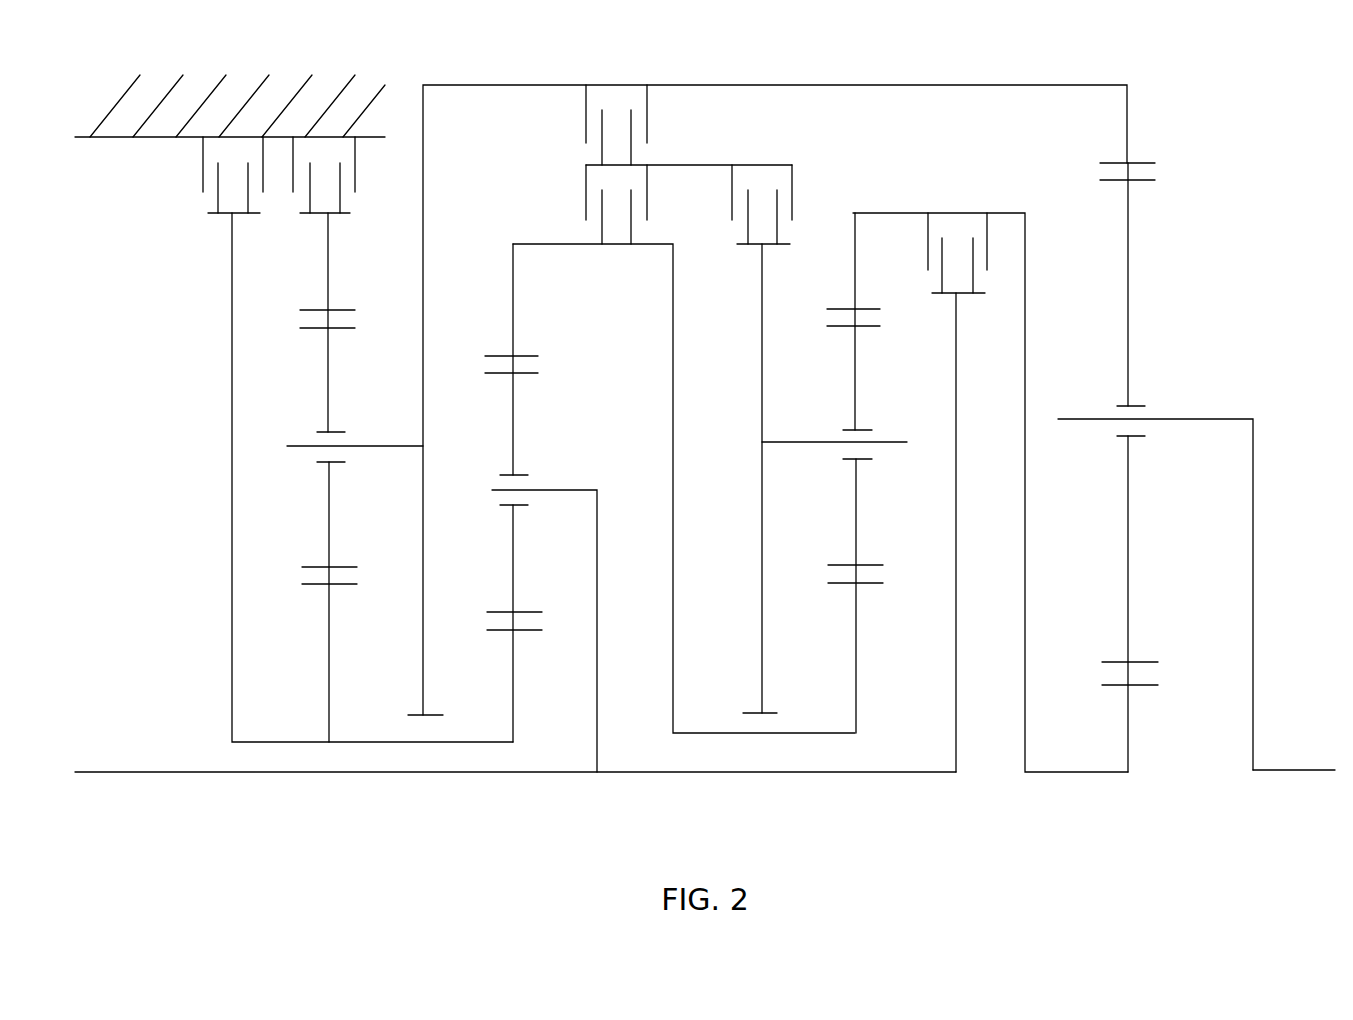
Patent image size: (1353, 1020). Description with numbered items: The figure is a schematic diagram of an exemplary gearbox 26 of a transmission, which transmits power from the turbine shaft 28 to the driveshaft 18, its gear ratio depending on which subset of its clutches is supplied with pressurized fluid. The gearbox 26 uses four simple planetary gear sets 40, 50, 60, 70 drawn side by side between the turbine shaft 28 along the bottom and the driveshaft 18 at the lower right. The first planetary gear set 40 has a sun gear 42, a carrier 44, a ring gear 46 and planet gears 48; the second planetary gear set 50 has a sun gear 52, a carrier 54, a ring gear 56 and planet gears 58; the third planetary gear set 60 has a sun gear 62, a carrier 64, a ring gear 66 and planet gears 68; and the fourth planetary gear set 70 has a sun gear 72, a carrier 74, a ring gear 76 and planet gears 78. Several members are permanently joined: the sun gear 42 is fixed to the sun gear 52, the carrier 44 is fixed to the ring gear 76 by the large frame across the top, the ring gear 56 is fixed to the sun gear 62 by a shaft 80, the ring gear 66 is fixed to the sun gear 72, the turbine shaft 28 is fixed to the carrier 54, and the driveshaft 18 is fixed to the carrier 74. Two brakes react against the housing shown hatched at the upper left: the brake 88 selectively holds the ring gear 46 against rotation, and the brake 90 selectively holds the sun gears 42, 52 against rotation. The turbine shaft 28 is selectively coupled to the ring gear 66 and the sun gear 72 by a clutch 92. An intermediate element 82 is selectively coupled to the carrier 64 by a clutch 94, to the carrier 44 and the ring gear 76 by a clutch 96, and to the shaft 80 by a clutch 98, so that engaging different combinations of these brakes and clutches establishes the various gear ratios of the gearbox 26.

The driveshaft 18 is at (1312, 769).
The gearbox 26 is at (765, 806).
The turbine shaft 28 is at (260, 772).
The planetary gear set 40 is at (372, 522).
The sun gear 42 is at (328, 627).
The carrier 44 is at (427, 320).
The ring gear 46 is at (303, 270).
The planet gears 48 is at (332, 388).
The planetary gear set 50 is at (505, 668).
The sun gear 52 is at (512, 672).
The carrier 54 is at (603, 582).
The ring gear 56 is at (513, 318).
The planet gears 58 is at (515, 435).
The planetary gear set 60 is at (977, 523).
The sun gear 62 is at (853, 625).
The carrier 64 is at (762, 405).
The ring gear 66 is at (850, 270).
The planet gears 68 is at (857, 392).
The planetary gear set 70 is at (1132, 634).
The sun gear 72 is at (1130, 730).
The carrier 74 is at (1230, 419).
The ring gear 76 is at (1127, 135).
The planet gears 78 is at (1132, 352).
The shaft 80 is at (673, 283).
The intermediate element 82 is at (702, 165).
The brake 88 is at (353, 170).
The brake 90 is at (203, 165).
The clutch 92 is at (963, 213).
The clutch 94 is at (745, 165).
The clutch 96 is at (585, 137).
The clutch 98 is at (585, 200).